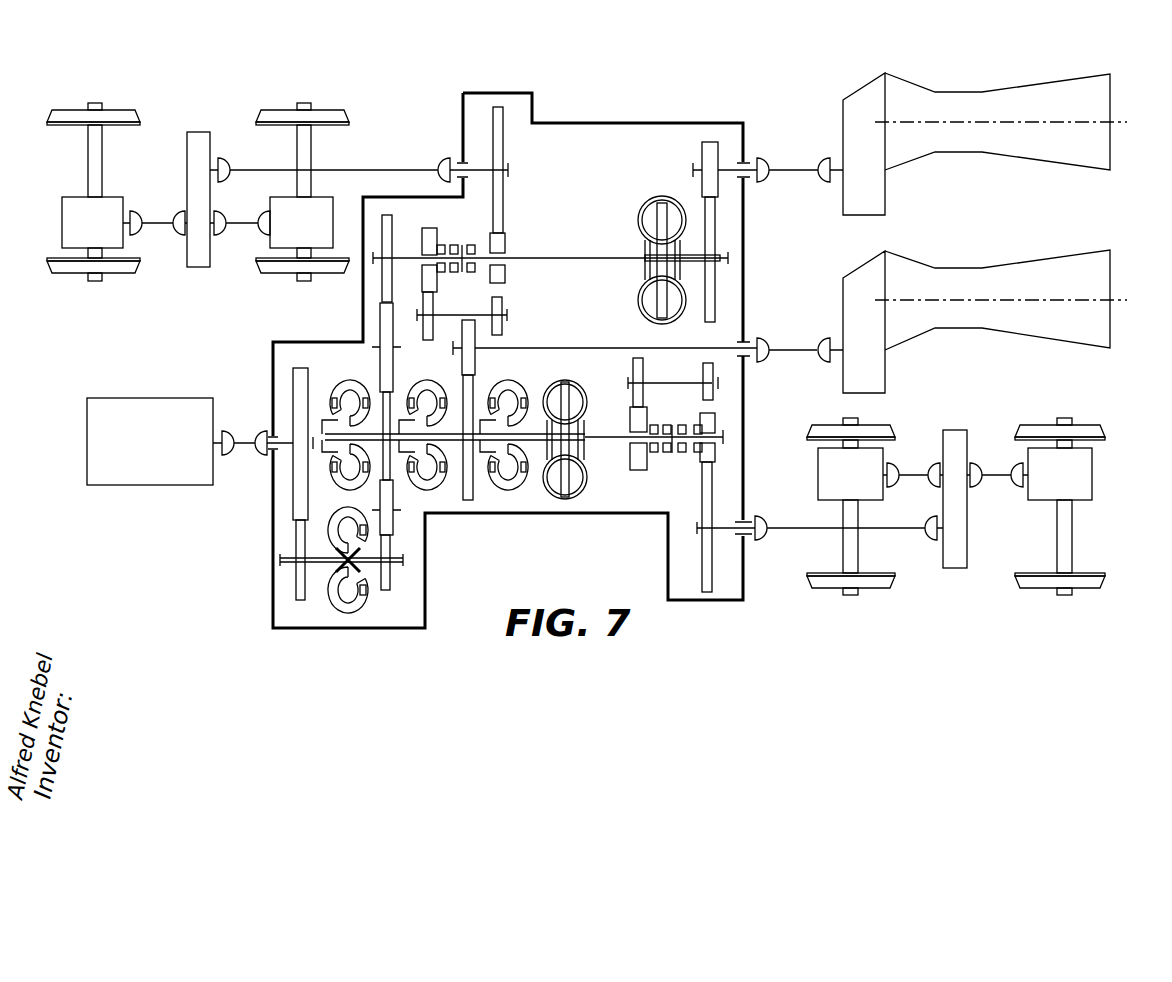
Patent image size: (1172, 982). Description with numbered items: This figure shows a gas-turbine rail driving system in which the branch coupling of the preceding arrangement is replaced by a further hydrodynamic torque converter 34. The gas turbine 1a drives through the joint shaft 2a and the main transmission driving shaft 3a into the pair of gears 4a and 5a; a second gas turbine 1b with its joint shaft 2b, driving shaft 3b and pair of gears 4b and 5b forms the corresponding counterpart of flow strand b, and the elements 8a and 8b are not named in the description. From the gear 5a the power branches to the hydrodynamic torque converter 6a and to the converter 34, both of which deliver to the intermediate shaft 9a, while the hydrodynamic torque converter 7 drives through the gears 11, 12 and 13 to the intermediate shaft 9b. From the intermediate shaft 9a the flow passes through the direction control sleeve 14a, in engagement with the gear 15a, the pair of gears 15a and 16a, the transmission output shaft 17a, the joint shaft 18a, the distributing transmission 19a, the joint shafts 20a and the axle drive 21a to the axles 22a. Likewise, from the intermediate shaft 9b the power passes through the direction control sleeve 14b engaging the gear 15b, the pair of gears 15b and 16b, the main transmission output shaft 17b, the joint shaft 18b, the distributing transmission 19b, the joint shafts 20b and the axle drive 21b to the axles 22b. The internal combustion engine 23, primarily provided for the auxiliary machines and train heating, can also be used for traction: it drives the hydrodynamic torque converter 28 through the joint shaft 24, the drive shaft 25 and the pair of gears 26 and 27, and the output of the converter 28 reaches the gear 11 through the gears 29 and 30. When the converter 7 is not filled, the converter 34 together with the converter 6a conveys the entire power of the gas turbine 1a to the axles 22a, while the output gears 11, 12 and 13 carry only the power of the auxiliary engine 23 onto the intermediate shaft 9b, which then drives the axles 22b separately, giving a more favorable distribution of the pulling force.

The gas turbine 1a is at (1025, 277).
The gas turbine engine 1b is at (1028, 108).
The joint shaft 2a is at (788, 348).
The engine output shaft 2b is at (798, 167).
The main transmission driving shaft 3a is at (578, 347).
The input shaft 3b is at (725, 168).
The gear 4a is at (468, 355).
The input gear 4b is at (708, 148).
The gear 5a is at (468, 485).
The gear shaft 5b is at (710, 222).
The hydrodynamic torque converter 6a is at (507, 467).
The hydrodynamic torque converter 7 is at (425, 397).
The hydrodynamic coupling 8a is at (553, 487).
The hydrodynamic coupling 8b is at (655, 217).
The intermediate shaft 9a is at (612, 440).
The intermediate shaft 9b is at (570, 257).
The gear 11 is at (385, 412).
The gear 12 is at (387, 330).
The gear 13 is at (383, 220).
The direction control sleeve 14a is at (683, 450).
The direction control sleeve 14b is at (450, 247).
The gear 15a is at (712, 422).
The gear 15b is at (507, 243).
The gear 16a is at (707, 477).
The gear 16b is at (495, 137).
The transmission output shaft 17a is at (722, 525).
The main transmission output shaft 17b is at (455, 157).
The joint shaft 18a is at (812, 530).
The joint shaft 18b is at (258, 167).
The distributing transmission 19a is at (957, 448).
The distributing transmission 19b is at (197, 140).
The joint shafts 20a is at (913, 470).
The joint shafts 20b is at (157, 225).
The axle drive 21a is at (867, 467).
The axle drive 21b is at (77, 220).
The axles 22a is at (848, 563).
The axles 22b is at (100, 105).
The internal combustion engine 23 is at (123, 437).
The joint shaft 24 is at (247, 437).
The drive shaft 25 is at (287, 447).
The gear 26 is at (300, 375).
The gear 27 is at (298, 533).
The hydrodynamic torque converter 28 is at (343, 590).
The gear 29 is at (392, 577).
The gear 30 is at (393, 512).
The converter 34 is at (348, 407).